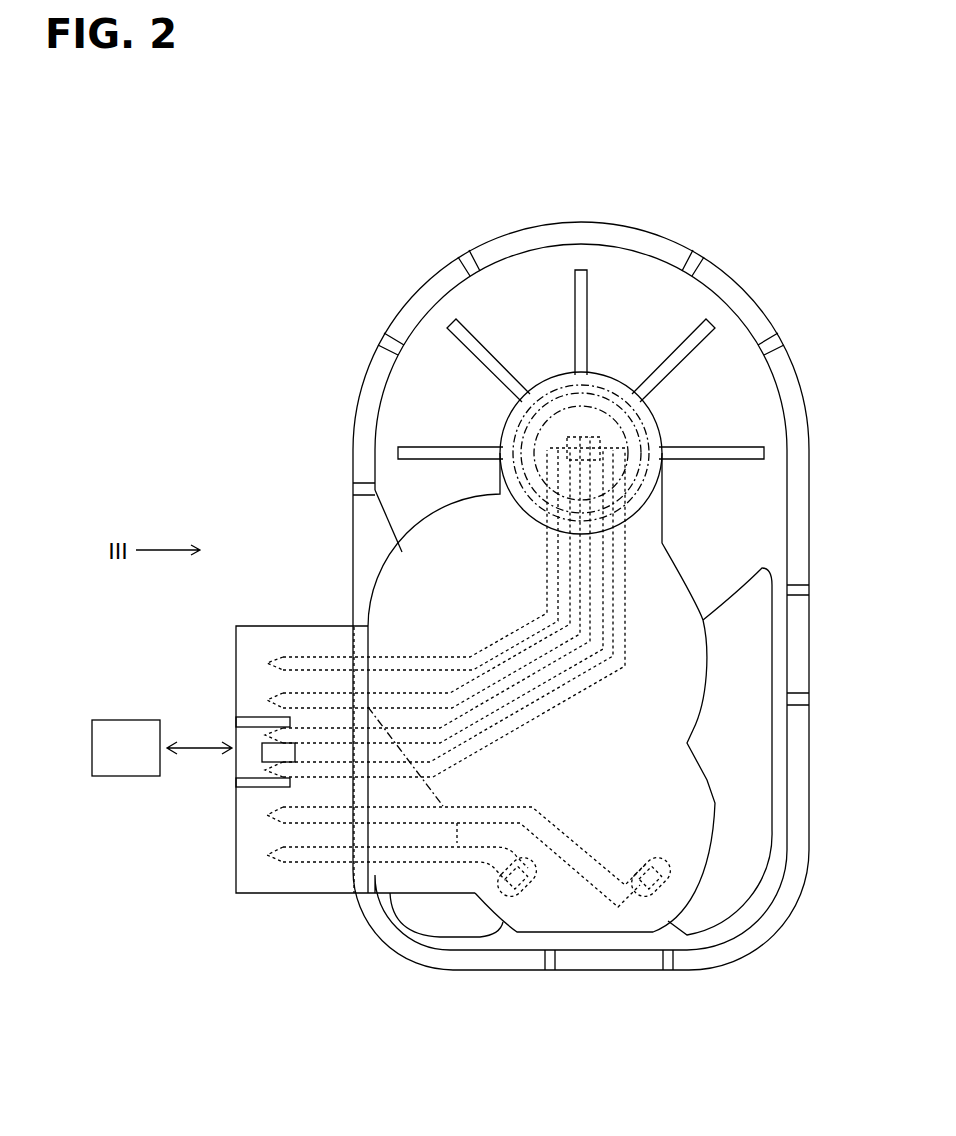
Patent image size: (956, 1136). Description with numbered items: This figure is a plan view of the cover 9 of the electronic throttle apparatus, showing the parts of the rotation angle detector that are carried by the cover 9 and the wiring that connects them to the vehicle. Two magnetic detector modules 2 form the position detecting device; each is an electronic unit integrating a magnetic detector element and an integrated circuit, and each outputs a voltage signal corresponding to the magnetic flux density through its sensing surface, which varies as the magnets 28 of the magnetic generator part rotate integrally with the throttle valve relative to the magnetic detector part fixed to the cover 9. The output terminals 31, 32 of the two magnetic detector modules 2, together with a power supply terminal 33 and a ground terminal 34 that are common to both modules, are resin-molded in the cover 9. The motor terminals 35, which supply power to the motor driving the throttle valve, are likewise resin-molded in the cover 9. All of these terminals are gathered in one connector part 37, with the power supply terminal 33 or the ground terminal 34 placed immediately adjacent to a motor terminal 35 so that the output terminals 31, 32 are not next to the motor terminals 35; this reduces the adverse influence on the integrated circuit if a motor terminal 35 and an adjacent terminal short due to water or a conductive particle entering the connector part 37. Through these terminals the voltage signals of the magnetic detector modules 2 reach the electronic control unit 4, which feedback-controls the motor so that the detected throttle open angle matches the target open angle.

The magnetic detector module 2 is at (557, 432).
The cover 9 is at (722, 263).
The magnets 28 is at (658, 422).
The output terminal 31 is at (267, 663).
The output terminal 32 is at (265, 735).
The power supply terminal 33 is at (267, 700).
The ground terminal 34 is at (265, 770).
The motor terminals 35 is at (267, 815).
The connector part 37 is at (285, 622).
The electronic control unit (ECU) 4 is at (131, 777).